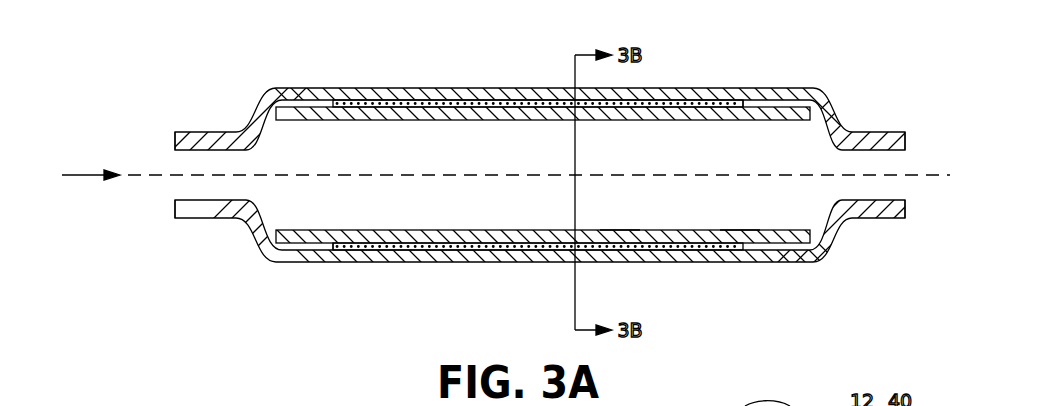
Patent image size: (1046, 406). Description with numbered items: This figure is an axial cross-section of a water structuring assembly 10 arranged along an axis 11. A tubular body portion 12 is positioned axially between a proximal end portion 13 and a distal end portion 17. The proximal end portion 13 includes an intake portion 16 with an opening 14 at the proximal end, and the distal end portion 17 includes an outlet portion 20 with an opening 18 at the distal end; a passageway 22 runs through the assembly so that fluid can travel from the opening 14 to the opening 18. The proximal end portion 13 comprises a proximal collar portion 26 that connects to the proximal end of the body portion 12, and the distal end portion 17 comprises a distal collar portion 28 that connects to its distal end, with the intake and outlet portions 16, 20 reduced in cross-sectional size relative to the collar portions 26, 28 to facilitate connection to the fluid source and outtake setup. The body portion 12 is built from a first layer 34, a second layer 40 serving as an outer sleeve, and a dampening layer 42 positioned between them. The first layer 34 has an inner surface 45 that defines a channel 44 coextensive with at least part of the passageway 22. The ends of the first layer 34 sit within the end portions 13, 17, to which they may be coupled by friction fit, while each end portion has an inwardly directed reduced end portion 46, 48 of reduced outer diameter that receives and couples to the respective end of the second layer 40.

The water structuring assembly 10 is at (170, 275).
The axis 11 is at (156, 180).
The body portion 12 is at (466, 283).
The proximal end portion 13 is at (235, 92).
The opening 14 is at (178, 157).
The intake portion 16 is at (218, 221).
The distal end portion 17 is at (830, 76).
The opening 18 is at (897, 166).
The outlet portion 20 is at (853, 131).
The passageway 22 is at (92, 171).
The proximal collar portion 26 is at (318, 264).
The distal collar portion 28 is at (795, 256).
The first layer 34 is at (602, 231).
The second layer 40 is at (422, 88).
The dampening layer 42 is at (558, 88).
The channel 44 is at (505, 215).
The inner surface 45 is at (723, 230).
The reduced end portion 46 is at (341, 251).
The reduced end portion 48 is at (743, 100).